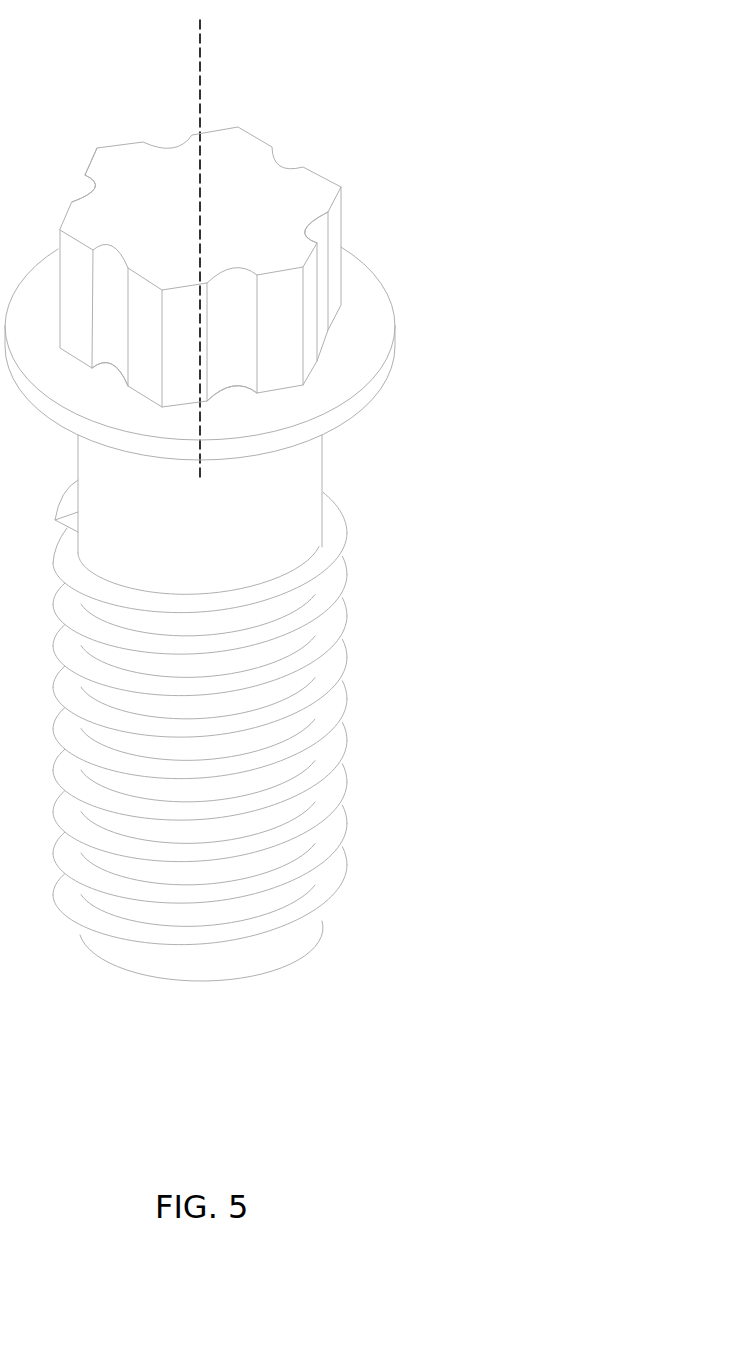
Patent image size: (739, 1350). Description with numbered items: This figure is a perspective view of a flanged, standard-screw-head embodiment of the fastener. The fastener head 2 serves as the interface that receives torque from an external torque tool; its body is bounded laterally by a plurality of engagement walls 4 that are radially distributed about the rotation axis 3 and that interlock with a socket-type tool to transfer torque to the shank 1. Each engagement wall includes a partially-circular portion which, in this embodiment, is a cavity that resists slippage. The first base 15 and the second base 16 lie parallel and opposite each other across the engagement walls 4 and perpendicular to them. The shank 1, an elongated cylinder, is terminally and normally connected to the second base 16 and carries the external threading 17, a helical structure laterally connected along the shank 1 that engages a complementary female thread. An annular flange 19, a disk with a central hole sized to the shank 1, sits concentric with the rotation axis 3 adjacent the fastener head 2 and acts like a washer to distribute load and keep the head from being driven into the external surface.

The shank 1 is at (314, 495).
The fastener head 2 is at (65, 307).
The rotation axis 3 is at (199, 40).
The plurality of engagement walls 4 is at (60, 196).
The first base 15 is at (112, 168).
The second base 16 is at (313, 378).
The external threading 17 is at (343, 736).
The annular flange 19 is at (386, 371).